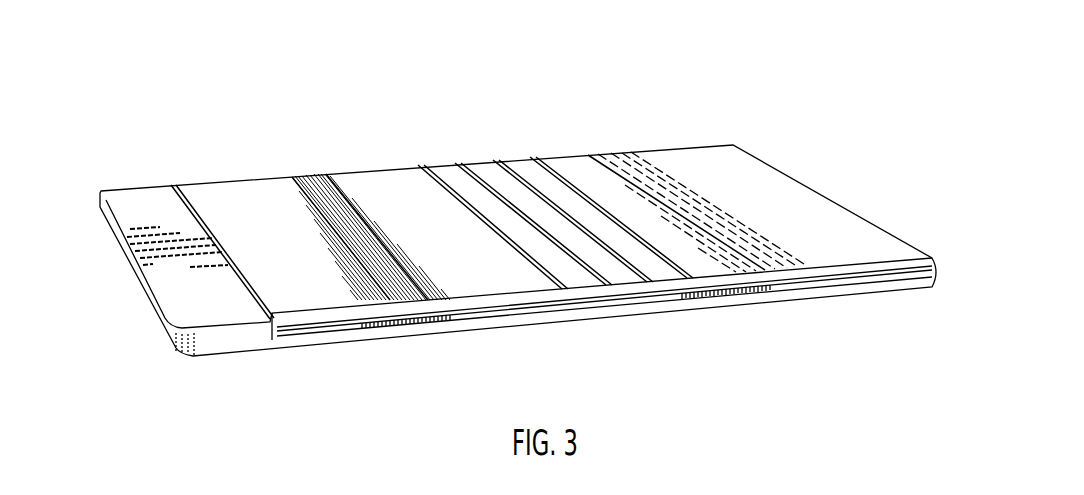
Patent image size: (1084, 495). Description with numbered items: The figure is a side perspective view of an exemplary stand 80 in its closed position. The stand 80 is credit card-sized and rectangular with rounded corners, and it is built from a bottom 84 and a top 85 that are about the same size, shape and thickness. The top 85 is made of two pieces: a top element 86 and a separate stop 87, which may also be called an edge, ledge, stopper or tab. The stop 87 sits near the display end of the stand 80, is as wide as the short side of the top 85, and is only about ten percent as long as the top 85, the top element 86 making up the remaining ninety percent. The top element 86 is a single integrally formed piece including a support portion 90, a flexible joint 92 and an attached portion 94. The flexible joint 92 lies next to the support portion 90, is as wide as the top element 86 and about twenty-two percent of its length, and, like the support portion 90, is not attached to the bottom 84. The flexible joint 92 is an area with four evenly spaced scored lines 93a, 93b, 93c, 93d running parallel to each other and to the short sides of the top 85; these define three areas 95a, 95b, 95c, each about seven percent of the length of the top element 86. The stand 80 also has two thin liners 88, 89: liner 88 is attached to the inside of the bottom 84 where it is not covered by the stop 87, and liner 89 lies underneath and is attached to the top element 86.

The stand 80 is at (657, 127).
The bottom 84 is at (258, 340).
The top 85 is at (507, 123).
The top element 86 is at (458, 275).
The stop 87 is at (196, 283).
The liner 88 is at (327, 338).
The liner 89 is at (381, 308).
The support portion 90 is at (379, 197).
The flexible joint 92 is at (507, 147).
The scored line 93a is at (547, 298).
The scored line 93b is at (593, 292).
The scored line 93c is at (640, 265).
The scored line 93d is at (708, 260).
The attached portion 94 is at (702, 163).
The area 95a is at (585, 292).
The area 95b is at (630, 292).
The area 95c is at (686, 282).